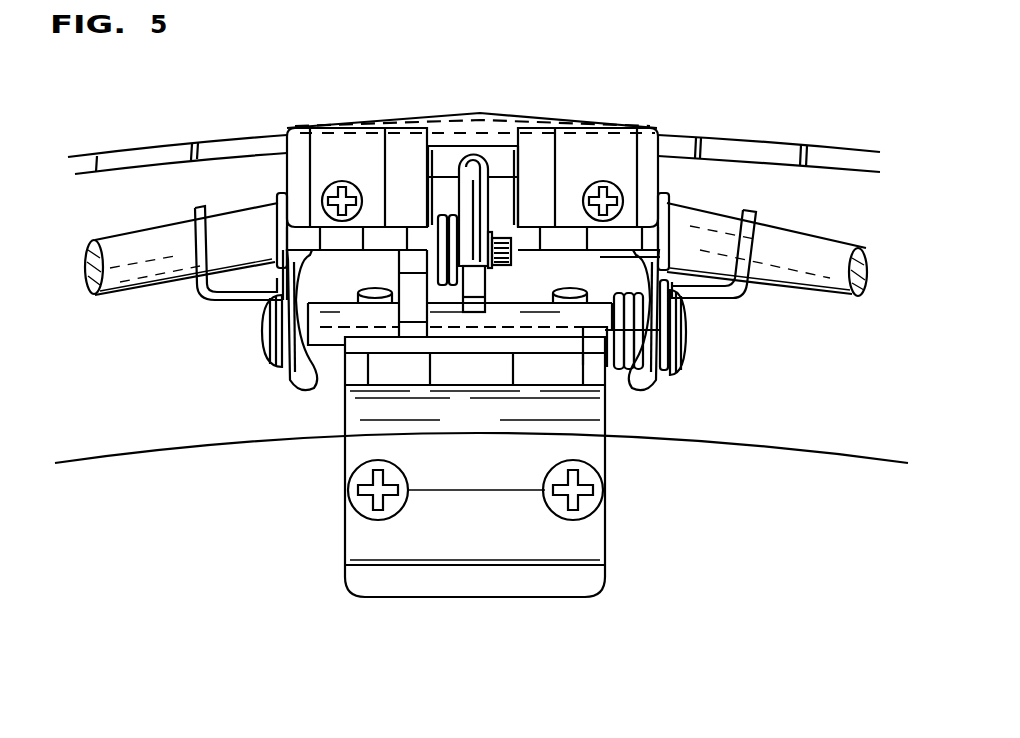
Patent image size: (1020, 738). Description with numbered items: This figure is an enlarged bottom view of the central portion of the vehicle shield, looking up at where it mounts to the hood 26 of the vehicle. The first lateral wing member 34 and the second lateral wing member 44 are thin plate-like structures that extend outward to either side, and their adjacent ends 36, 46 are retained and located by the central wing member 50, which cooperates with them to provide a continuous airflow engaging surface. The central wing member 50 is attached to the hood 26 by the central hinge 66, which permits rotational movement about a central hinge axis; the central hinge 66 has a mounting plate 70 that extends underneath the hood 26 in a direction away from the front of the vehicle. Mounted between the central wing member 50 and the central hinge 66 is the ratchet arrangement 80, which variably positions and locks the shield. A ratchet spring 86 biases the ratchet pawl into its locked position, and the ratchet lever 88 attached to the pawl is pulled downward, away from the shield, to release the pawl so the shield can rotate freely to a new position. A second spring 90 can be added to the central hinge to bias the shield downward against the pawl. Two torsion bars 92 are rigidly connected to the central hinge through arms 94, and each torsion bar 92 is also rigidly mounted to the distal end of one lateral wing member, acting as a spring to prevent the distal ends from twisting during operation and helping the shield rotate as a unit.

The hood 26 is at (735, 440).
The first lateral wing member 34 is at (128, 146).
The adjacent end of the first lateral wing member 36 is at (282, 128).
The second lateral wing member 44 is at (800, 144).
The adjacent end of the second lateral wing member 46 is at (700, 136).
The central wing member 50 is at (474, 113).
The central hinge 66 is at (262, 343).
The mounting plate 70 is at (413, 597).
The ratchet arrangement 80 is at (497, 196).
The ratchet spring 86 is at (447, 285).
The ratchet lever 88 is at (470, 188).
The second spring 90 is at (628, 383).
The torsion bar 92 is at (142, 292).
The arm 94 is at (215, 297).